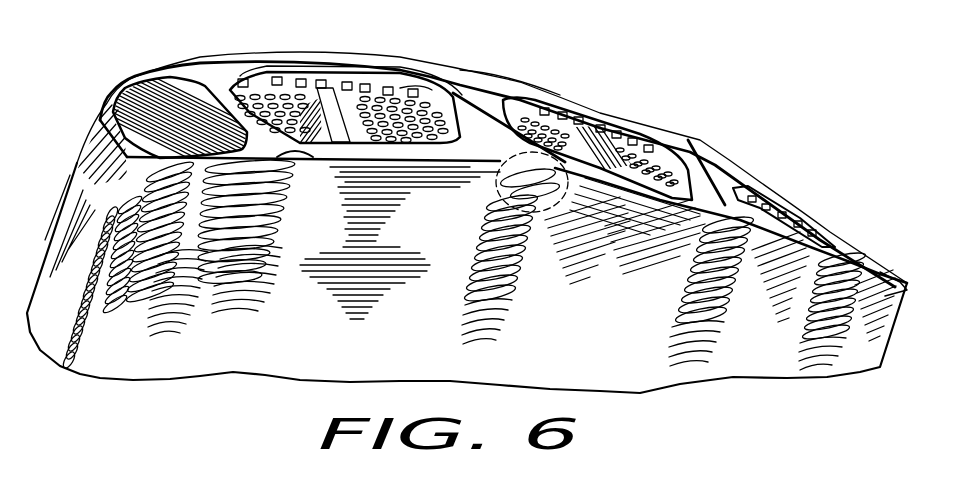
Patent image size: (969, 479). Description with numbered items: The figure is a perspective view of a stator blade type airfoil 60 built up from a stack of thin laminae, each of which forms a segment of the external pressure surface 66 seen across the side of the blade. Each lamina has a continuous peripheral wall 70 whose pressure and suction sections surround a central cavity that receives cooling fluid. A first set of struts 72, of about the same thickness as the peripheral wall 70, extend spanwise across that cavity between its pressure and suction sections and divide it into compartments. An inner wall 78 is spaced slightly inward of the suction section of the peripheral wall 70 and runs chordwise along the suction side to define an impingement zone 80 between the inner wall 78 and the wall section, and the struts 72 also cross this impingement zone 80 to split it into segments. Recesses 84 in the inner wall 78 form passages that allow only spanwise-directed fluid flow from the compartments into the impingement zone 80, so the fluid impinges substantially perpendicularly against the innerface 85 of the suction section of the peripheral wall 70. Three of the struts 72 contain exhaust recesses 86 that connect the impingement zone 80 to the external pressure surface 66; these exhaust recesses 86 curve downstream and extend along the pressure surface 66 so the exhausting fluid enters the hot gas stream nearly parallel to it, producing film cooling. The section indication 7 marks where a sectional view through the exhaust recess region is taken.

The section line 7- 7 is at (566, 200).
The stator blade type airfoil 60 is at (839, 156).
The external pressure surface 66 is at (622, 381).
The peripheral wall 70 is at (543, 97).
The first set of struts 72 is at (505, 92).
The inner wall 78 is at (349, 84).
The impingement zone 80 is at (302, 72).
The recesses 84 is at (250, 80).
The innerface 85 is at (412, 88).
The exhaust recesses 86 is at (478, 113).